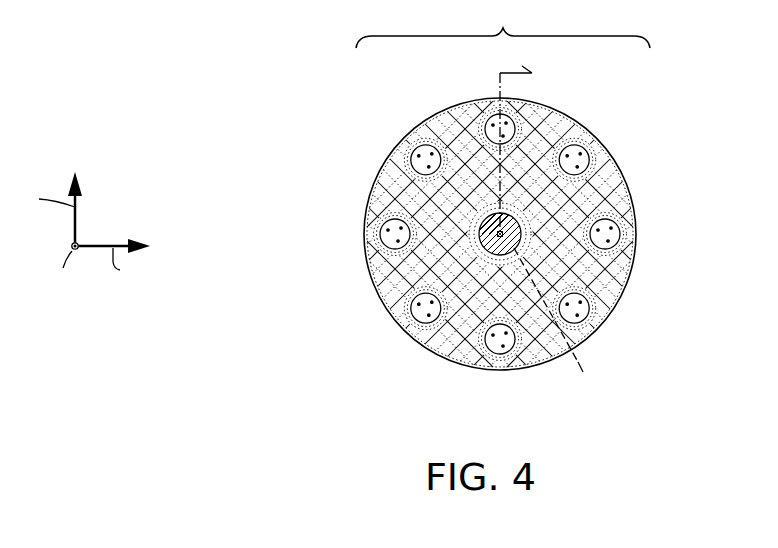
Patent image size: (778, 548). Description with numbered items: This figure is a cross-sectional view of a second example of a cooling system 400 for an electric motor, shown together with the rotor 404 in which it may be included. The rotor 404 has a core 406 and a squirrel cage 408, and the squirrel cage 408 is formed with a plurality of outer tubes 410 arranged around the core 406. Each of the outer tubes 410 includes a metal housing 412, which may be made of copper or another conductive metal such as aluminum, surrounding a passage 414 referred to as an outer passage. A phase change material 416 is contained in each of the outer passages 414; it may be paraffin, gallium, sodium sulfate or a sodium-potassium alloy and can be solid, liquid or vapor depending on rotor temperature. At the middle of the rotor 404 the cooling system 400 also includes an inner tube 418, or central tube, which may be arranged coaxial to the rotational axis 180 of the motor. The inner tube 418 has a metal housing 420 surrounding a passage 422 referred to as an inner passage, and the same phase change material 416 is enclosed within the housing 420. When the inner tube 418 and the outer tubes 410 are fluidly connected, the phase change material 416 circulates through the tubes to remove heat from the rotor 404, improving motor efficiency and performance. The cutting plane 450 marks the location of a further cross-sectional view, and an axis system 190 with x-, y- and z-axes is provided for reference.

The axis system 190 is at (116, 208).
The rotor 404 is at (503, 28).
The cooling system 400 is at (634, 148).
The squirrel cage 408 is at (354, 220).
The core 406 is at (584, 215).
The outer tubes 410 is at (379, 218).
The metal housing 412 is at (423, 139).
The passage 414 is at (443, 159).
The phase change material 416 is at (429, 156).
The passage 422 is at (533, 235).
The metal housing 420 is at (474, 246).
The inner tube 418 is at (499, 268).
The rotational axis 180 is at (497, 234).
The cutting plane 450 is at (612, 378).